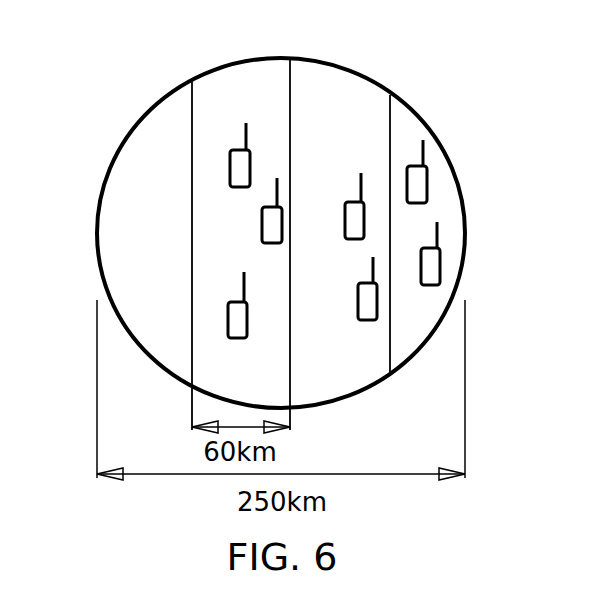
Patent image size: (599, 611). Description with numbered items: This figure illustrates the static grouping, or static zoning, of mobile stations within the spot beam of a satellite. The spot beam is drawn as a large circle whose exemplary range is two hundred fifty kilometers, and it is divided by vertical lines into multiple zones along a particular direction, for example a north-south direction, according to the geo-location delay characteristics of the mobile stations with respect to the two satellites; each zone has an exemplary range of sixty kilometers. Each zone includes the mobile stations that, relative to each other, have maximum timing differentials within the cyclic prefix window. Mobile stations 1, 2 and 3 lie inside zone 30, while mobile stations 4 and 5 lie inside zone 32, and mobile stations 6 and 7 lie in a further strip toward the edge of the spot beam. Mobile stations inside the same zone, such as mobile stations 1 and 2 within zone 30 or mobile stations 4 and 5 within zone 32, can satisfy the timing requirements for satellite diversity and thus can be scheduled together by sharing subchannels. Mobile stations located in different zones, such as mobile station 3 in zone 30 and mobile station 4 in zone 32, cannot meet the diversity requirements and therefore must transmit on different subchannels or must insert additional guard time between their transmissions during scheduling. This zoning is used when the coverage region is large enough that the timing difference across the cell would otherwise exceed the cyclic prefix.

The zone 30 is at (248, 82).
The zone 32 is at (345, 88).
The mobile station 1 is at (240, 169).
The mobile station 2 is at (237, 320).
The mobile station 3 is at (272, 225).
The mobile station 4 is at (354, 220).
The mobile station 5 is at (367, 304).
The mobile station 6 is at (417, 186).
The mobile station 7 is at (430, 268).